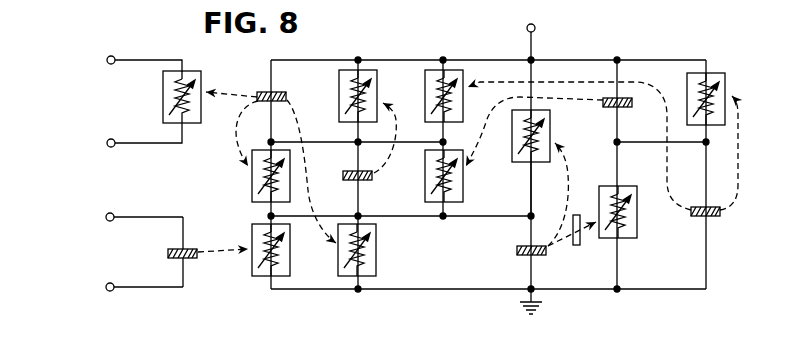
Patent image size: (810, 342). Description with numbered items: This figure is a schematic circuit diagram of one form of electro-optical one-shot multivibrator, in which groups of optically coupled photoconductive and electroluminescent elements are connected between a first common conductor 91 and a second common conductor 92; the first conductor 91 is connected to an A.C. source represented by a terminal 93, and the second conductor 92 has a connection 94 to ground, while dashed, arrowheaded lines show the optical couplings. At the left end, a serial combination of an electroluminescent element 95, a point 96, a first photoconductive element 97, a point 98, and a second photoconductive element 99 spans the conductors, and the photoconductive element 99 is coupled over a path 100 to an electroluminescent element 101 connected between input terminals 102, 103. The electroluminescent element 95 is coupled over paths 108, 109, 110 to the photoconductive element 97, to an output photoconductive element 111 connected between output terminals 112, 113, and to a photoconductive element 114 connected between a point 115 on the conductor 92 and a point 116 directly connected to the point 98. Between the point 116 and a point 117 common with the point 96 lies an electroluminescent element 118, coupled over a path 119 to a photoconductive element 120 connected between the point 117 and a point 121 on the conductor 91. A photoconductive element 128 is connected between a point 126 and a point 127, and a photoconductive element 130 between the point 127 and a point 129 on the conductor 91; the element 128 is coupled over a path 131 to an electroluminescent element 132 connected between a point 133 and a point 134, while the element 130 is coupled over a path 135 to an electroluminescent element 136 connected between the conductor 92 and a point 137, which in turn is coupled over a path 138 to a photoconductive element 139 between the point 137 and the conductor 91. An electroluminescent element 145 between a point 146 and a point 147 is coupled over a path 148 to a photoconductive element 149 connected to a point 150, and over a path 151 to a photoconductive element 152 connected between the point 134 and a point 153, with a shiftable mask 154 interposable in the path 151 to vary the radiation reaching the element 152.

The first common conductor 91 is at (594, 60).
The second common conductor 92 is at (435, 289).
The terminal 93 is at (535, 28).
The connection to base reference potential 94 is at (520, 302).
The electroluminescent element 95 is at (268, 92).
The point 96 is at (270, 140).
The first photoconductive element 97 is at (252, 186).
The point 98 is at (271, 216).
The second photoconductive element 99 is at (252, 266).
The optical path 100 is at (228, 250).
The electroluminescent element 101 is at (168, 253).
The terminal 102 is at (106, 217).
The terminal 103 is at (106, 287).
The optical path 108 is at (234, 148).
The optical path 109 is at (238, 78).
The optical path 110 is at (320, 232).
The output photoconductive element 111 is at (163, 92).
The terminal 112 is at (107, 60).
The terminal 113 is at (107, 143).
The photoconductive element 114 is at (376, 262).
The point 115 is at (356, 291).
The point 116 is at (356, 214).
The point 117 is at (358, 142).
The electroluminescent element 118 is at (366, 180).
The optical path 119 is at (389, 162).
The photoconductive element 120 is at (339, 90).
The point 121 is at (358, 60).
The point 126 is at (445, 218).
The point 127 is at (443, 142).
The photoconductive element 128 is at (463, 200).
The point 129 is at (443, 60).
The photoconductive element 130 is at (425, 92).
The optical path 131 is at (493, 122).
The electroluminescent element 132 is at (624, 107).
The point 133 is at (617, 60).
The point 134 is at (615, 140).
The optical path 135 is at (570, 82).
The electroluminescent element 136 is at (712, 216).
The point 137 is at (705, 146).
The optical path 138 is at (740, 150).
The photoconductive element 139 is at (725, 84).
The electroluminescent element 145 is at (517, 250).
The point 146 is at (533, 291).
The point 147 is at (533, 212).
The optical path 148 is at (564, 162).
The photoconductive element 149 is at (515, 166).
The point 150 is at (531, 60).
The optical path 151 is at (556, 248).
The photoconductive element 152 is at (637, 236).
The point 153 is at (619, 289).
The shiftable mask 154 is at (580, 243).